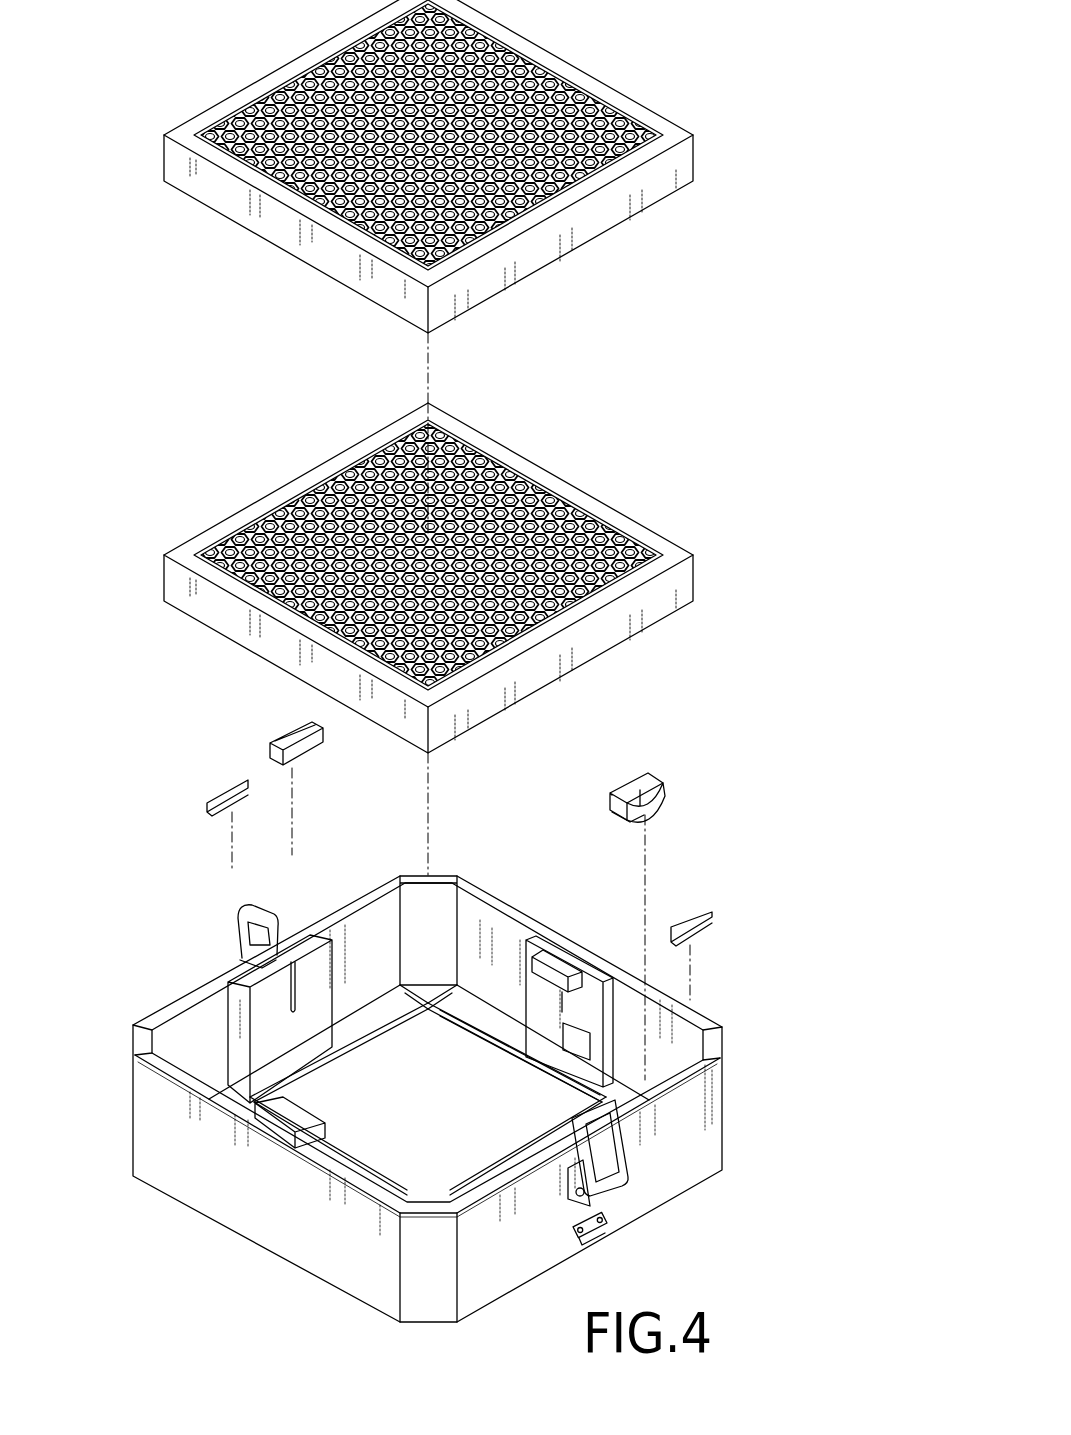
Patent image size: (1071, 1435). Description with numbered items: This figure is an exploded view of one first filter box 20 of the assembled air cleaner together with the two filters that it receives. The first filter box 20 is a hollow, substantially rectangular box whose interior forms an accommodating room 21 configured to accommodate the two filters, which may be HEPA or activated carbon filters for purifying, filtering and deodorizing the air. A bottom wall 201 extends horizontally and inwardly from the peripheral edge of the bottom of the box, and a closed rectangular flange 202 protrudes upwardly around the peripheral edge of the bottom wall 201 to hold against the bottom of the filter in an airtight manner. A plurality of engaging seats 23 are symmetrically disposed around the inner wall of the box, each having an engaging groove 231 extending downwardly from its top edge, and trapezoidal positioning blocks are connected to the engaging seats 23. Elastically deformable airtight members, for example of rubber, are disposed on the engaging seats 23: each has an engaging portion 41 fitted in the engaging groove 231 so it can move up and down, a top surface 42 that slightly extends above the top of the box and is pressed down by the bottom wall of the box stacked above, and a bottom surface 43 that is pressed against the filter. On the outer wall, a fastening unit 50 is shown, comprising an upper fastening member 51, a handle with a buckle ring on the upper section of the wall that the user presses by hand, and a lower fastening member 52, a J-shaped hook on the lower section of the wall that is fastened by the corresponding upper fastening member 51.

The first filter box 20 is at (490, 880).
The accommodating room 21 is at (379, 1141).
The engaging seat 23 is at (264, 969).
The engaging groove 231 is at (320, 964).
The engaging portion 41 is at (663, 813).
The top surface 42 is at (638, 772).
The bottom surface 43 is at (606, 818).
The fastening unit 50 is at (693, 1186).
The upper fastening member 51 is at (626, 1152).
The lower fastening member 52 is at (604, 1221).
The bottom wall 201 is at (507, 1077).
The flange 202 is at (458, 1034).